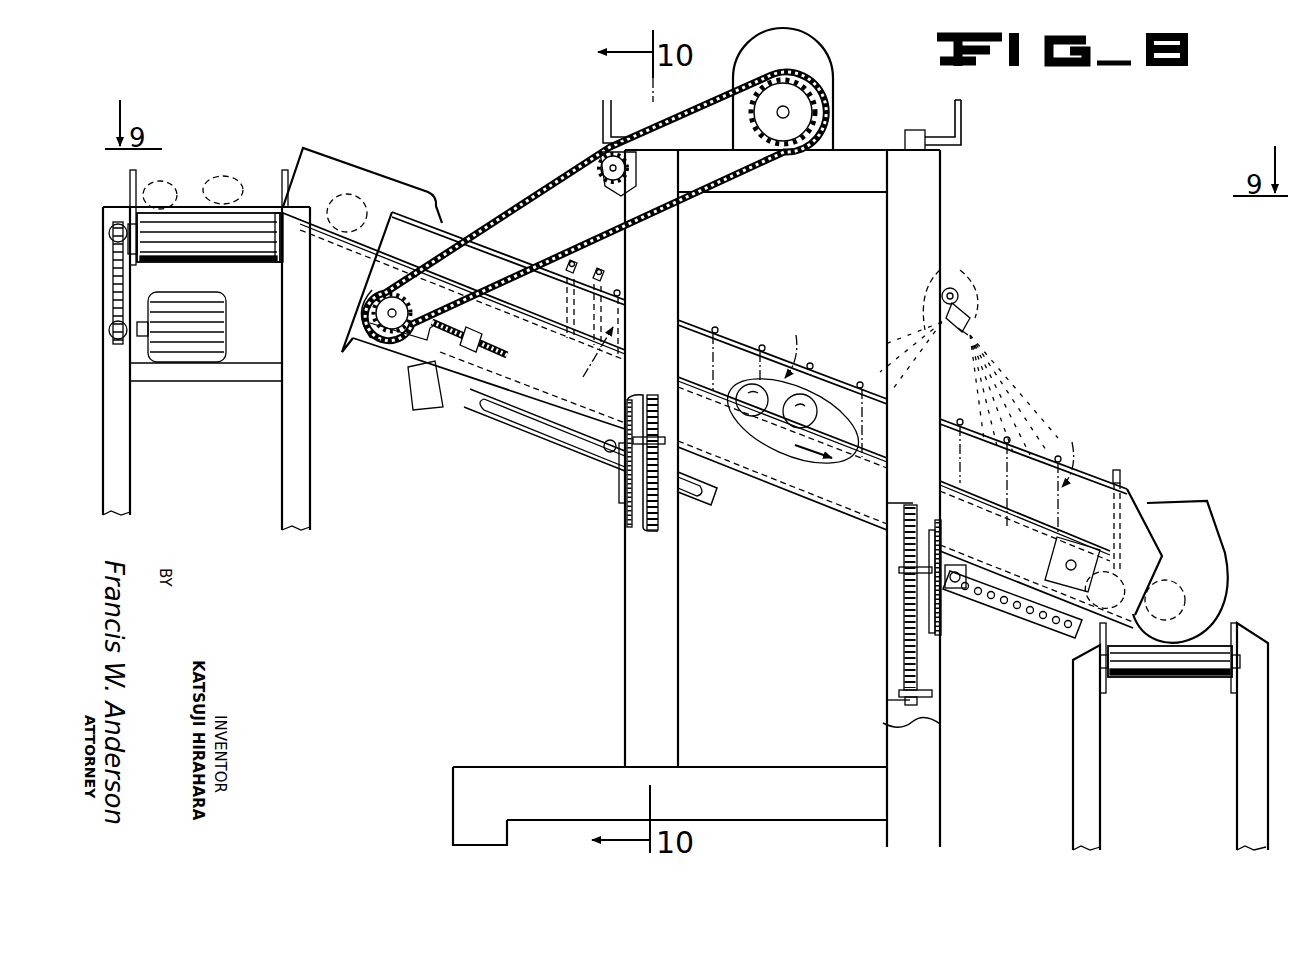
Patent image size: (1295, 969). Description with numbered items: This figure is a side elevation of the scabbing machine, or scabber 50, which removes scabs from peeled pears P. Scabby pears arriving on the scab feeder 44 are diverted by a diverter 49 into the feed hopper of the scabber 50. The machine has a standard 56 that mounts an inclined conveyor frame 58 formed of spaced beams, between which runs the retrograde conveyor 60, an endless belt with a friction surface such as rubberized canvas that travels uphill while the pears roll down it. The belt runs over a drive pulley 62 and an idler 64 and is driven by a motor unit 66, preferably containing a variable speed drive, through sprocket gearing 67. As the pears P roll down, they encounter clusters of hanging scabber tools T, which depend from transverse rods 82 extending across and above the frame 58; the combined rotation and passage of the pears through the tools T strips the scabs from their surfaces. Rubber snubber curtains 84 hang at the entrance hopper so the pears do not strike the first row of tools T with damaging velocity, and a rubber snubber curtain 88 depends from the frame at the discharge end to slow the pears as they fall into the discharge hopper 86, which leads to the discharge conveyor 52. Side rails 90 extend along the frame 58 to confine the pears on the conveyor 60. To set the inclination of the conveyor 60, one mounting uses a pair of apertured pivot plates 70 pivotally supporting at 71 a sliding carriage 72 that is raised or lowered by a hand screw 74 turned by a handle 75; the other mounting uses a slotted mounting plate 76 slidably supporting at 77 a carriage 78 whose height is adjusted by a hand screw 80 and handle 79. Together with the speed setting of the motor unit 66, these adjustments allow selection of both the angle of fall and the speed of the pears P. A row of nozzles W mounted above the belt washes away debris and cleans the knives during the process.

The scab feeder 44 is at (187, 210).
The diverter 49 is at (269, 197).
The scabber 50 is at (372, 143).
The discharge conveyor 52 is at (1163, 681).
The standard 56 is at (942, 215).
The inclined conveyor frame 58 is at (850, 512).
The retrograde conveyor 60 is at (768, 425).
The drive pulley 62 is at (356, 338).
The idler 64 is at (1048, 553).
The motor unit 66 is at (835, 103).
The sprocket gearing 67 is at (538, 194).
The apertured pivot plates 70 is at (1041, 614).
The pivot 71 is at (958, 585).
The sliding carriage 72 is at (942, 620).
The hand screw 74 is at (905, 597).
The handle 75 is at (961, 130).
The slotted mounting plate 76 is at (498, 415).
The sliding support 77 is at (610, 453).
The carriage 78 is at (619, 490).
The handle 79 is at (601, 118).
The hand screw 80 is at (658, 521).
The transverse rods 82 is at (736, 329).
The rubber snubber curtains 84 is at (590, 326).
The discharge hopper 86 is at (1222, 559).
The rubber snubber curtain 88 is at (1120, 512).
The side rails 90 is at (848, 445).
The pears P is at (170, 186).
The scabber tools T is at (825, 396).
The nozzles W is at (948, 283).